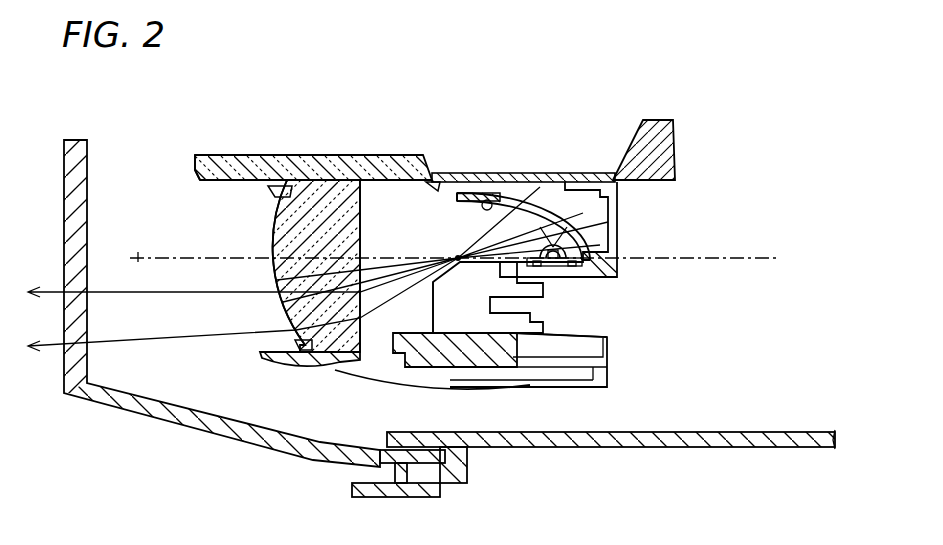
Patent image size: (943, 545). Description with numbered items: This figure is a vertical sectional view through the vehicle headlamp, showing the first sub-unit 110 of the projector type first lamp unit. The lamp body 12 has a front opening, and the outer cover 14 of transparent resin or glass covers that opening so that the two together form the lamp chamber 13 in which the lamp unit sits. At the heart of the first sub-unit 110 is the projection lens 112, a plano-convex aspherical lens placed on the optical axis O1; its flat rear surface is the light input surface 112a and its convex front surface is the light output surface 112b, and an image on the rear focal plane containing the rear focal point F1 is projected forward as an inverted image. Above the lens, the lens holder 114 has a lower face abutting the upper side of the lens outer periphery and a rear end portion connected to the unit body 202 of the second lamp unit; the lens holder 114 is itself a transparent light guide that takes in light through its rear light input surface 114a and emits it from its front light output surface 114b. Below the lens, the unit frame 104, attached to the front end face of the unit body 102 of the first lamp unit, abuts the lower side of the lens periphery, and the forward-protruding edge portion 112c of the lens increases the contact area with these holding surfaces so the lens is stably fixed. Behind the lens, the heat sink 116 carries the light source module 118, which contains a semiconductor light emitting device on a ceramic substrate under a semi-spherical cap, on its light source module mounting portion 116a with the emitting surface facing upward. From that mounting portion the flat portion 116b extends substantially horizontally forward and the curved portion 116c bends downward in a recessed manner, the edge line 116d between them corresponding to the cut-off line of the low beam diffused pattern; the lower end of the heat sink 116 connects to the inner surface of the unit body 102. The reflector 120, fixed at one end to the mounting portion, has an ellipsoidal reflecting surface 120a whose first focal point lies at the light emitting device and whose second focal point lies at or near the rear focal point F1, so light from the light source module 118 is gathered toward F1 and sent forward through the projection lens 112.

The lamp body 12 is at (543, 445).
The lamp chamber 13 is at (265, 398).
The outer cover 14 is at (133, 412).
The unit body 102 is at (362, 380).
The unit frame 104 is at (300, 368).
The first sub-unit 110 is at (569, 261).
The projection lens 112 is at (268, 243).
The light input surface 112a is at (363, 237).
The light output surface 112b is at (272, 278).
The edge portion 112c is at (277, 190).
The lens holder 114 is at (358, 155).
The light input surface 114a is at (432, 173).
The light output surface 114b is at (195, 170).
The heat sink 116 is at (517, 282).
The light source module mounting portion 116a is at (563, 293).
The flat portion 116b is at (513, 205).
The curved portion 116c is at (448, 300).
The edge line 116d is at (418, 335).
The light source module 118 is at (604, 237).
The reflector 120 is at (532, 200).
The reflecting surface 120a is at (488, 200).
The unit body 202 is at (583, 175).
The optical axis O1 is at (138, 257).
The rear focal point F1 is at (455, 257).